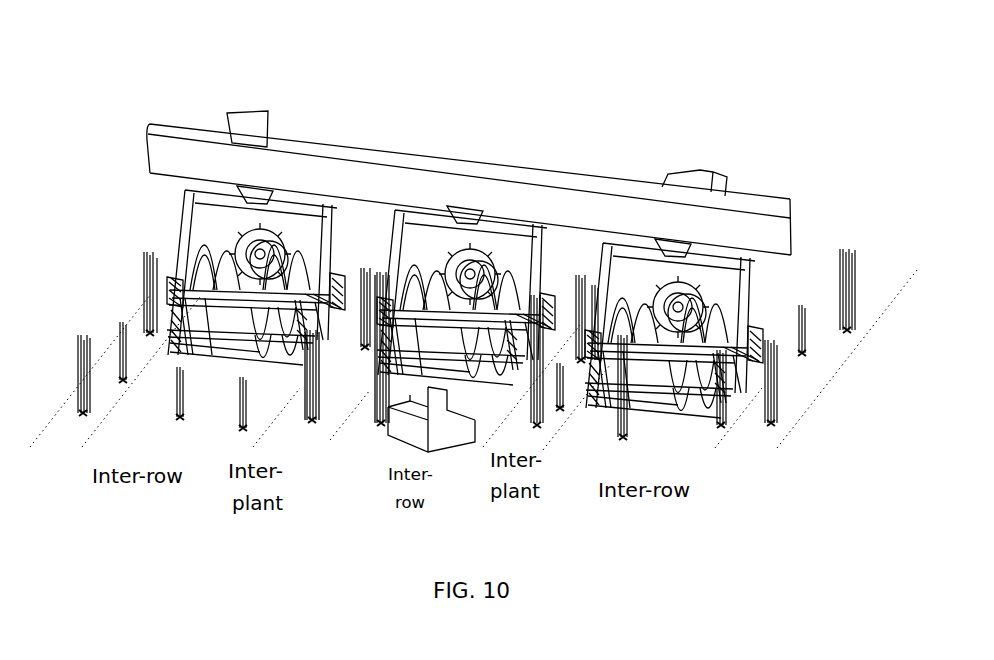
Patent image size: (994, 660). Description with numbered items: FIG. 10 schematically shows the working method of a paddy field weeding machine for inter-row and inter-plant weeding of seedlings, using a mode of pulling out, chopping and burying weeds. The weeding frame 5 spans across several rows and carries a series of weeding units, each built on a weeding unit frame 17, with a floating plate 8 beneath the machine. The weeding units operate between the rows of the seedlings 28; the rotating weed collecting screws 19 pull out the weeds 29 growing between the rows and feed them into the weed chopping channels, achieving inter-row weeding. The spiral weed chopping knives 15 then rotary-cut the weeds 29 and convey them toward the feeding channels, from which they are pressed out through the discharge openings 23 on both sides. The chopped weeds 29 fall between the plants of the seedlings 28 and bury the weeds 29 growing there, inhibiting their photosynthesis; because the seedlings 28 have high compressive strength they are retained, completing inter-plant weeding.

The weeding frame 5 is at (445, 187).
The spiral weed chopping knife 15 is at (468, 262).
The weeding unit frame 17 is at (489, 295).
The weed collecting screw 19 is at (504, 325).
The discharge opening 23 is at (545, 330).
The seedlings 28 is at (312, 420).
The weeds 29 is at (381, 423).
The floating plate 8 is at (428, 452).